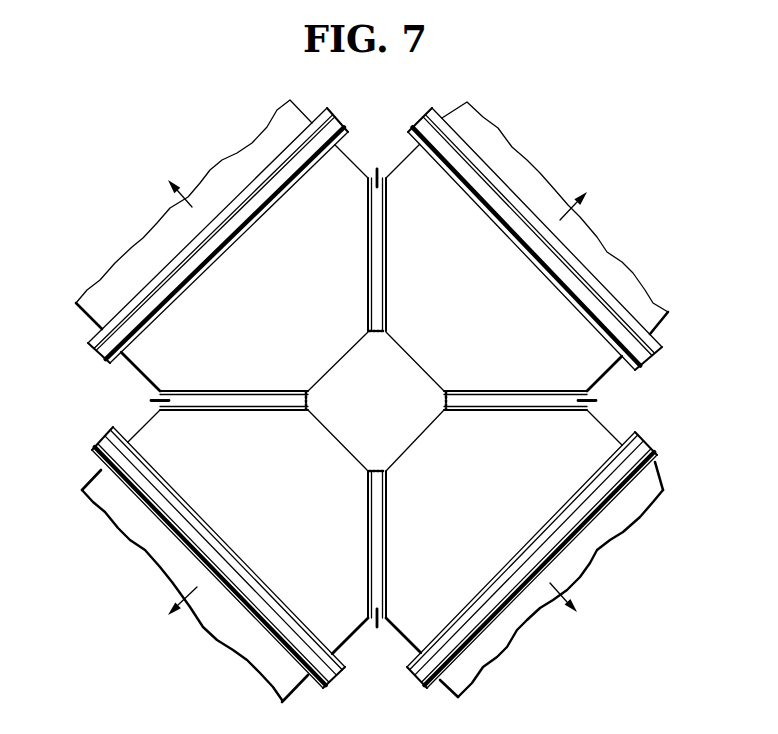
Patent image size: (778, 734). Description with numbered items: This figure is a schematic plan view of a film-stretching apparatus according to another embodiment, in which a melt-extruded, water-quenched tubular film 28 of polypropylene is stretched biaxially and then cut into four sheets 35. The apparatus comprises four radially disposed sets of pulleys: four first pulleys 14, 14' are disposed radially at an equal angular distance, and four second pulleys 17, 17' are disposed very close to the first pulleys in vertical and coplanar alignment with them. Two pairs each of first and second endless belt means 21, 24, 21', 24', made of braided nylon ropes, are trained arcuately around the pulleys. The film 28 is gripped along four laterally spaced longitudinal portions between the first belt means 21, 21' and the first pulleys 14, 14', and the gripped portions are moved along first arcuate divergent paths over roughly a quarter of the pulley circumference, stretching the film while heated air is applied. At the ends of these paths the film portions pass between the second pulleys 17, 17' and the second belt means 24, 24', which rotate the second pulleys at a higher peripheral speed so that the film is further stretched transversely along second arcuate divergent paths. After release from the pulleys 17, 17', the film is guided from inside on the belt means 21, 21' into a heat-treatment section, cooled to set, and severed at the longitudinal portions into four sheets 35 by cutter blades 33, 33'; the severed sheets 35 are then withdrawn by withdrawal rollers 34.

The first pulley 14 is at (373, 398).
The second pulley 17 is at (373, 398).
The first pulley 14' is at (424, 398).
The second pulley 17' is at (424, 398).
The first endless belt means 21 is at (335, 410).
The first endless belt means 21' is at (364, 361).
The second endless belt means 24 is at (412, 410).
The second endless belt means 24' is at (393, 403).
The tubular film 28 is at (415, 360).
The cutter blade 33 is at (377, 398).
The cutter blade 33' is at (376, 411).
The withdrawal roller 34 is at (170, 263).
The sheet 35 is at (250, 153).